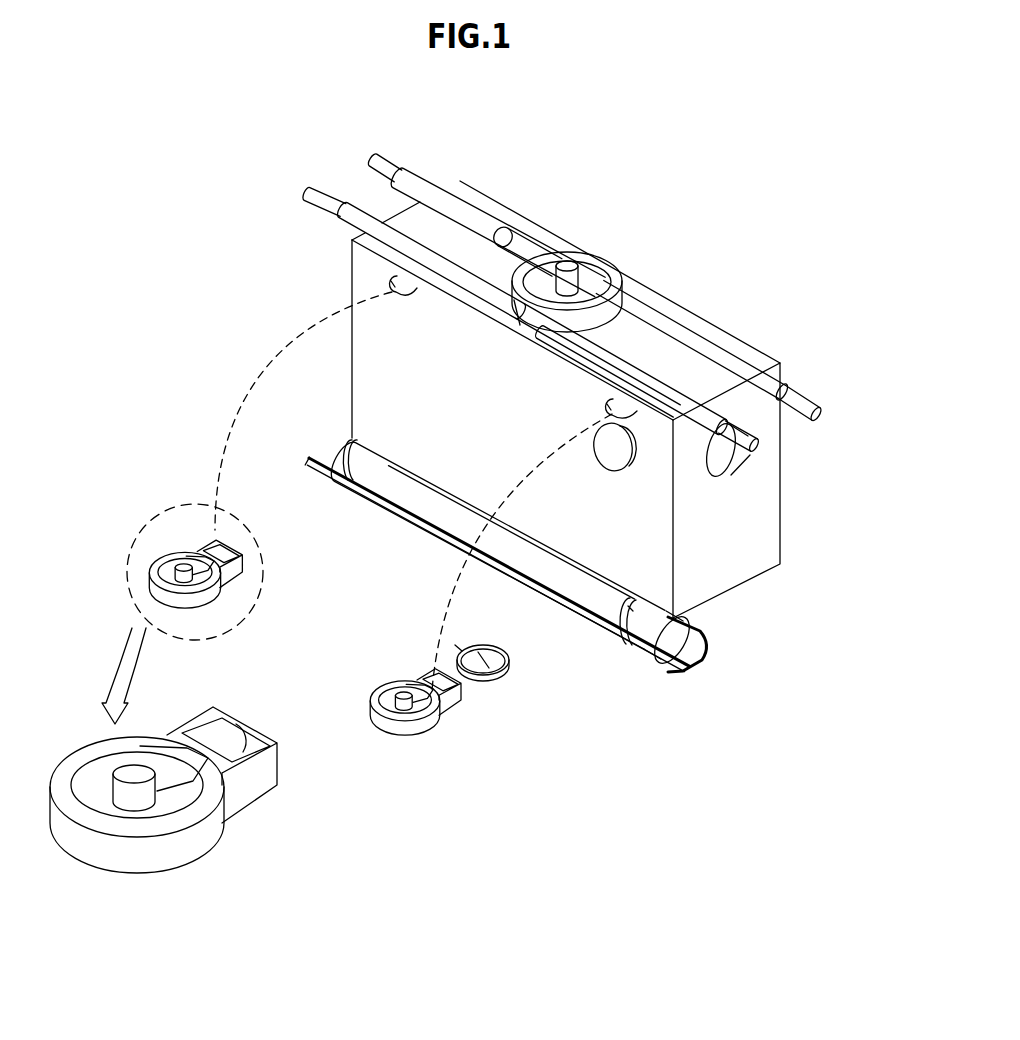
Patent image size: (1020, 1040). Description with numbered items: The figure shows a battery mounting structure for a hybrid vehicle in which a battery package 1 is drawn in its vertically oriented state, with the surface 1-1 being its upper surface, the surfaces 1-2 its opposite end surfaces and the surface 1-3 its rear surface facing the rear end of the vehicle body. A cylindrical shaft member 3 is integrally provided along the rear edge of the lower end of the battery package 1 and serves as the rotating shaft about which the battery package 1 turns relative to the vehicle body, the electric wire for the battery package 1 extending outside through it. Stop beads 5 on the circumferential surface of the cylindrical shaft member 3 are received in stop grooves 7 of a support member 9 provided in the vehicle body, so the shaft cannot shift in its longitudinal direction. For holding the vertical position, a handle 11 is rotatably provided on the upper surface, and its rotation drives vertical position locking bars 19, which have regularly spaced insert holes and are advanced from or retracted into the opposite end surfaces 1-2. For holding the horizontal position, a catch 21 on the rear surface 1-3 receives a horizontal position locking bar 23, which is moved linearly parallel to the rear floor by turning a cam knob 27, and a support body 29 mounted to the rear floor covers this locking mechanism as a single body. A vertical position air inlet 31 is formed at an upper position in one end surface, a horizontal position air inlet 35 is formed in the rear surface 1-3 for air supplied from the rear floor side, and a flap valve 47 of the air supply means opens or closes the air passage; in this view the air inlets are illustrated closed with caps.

The battery package 1 is at (712, 312).
The upper surface 1-1 is at (655, 348).
The opposite end surfaces 1-2 is at (712, 528).
The rear surface 1-3 is at (394, 380).
The cylindrical shaft member 3 is at (352, 448).
The stop beads 5 is at (333, 450).
The stop grooves 7 is at (662, 660).
The support member 9 is at (400, 508).
The handle 11 is at (515, 243).
The vertical position locking bars 19 is at (306, 193).
The catch 21 is at (387, 283).
The horizontal position locking bar 23 is at (227, 732).
The cam knob 27 is at (125, 775).
The support body 29 is at (193, 813).
The vertical position air inlet 31 is at (740, 460).
The horizontal position air inlet 35 is at (625, 455).
The flap valve 47 is at (502, 683).